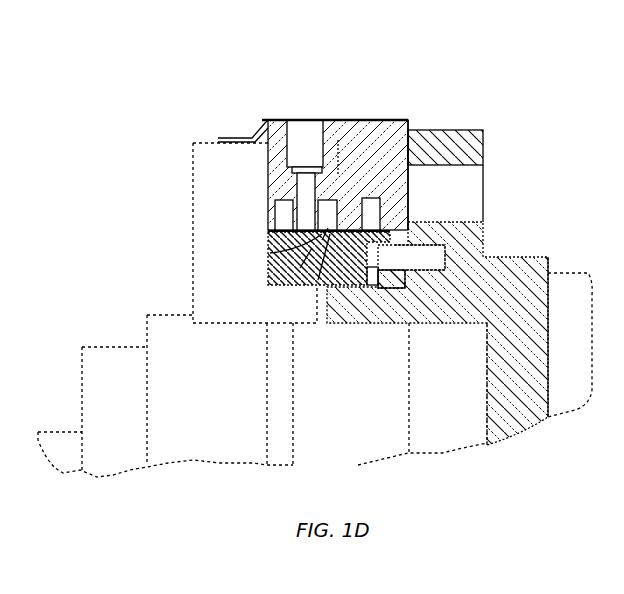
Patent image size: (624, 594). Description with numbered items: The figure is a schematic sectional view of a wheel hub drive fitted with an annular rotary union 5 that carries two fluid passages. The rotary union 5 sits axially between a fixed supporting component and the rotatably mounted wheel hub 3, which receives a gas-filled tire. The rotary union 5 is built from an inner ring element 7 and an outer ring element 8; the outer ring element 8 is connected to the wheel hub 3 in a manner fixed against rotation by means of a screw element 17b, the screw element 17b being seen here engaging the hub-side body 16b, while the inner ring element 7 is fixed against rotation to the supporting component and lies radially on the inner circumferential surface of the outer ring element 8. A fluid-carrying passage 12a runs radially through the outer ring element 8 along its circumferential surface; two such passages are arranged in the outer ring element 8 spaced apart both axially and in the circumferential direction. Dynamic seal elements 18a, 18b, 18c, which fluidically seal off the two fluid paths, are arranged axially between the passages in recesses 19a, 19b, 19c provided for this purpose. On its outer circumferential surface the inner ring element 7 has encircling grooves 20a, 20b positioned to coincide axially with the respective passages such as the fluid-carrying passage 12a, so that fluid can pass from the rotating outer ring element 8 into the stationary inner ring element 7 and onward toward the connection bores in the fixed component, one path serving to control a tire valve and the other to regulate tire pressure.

The wheel hub 3 is at (473, 150).
The rotary union 5 is at (362, 108).
The inner ring element 7 is at (268, 262).
The outer ring element 8 is at (380, 130).
The fluid-carrying passage 12a is at (300, 128).
The carrier body 16b is at (416, 287).
The screw element 17b is at (390, 262).
The dynamic seal element 18a is at (282, 215).
The dynamic seal element 18b is at (340, 170).
The dynamic seal element 18c is at (411, 135).
The recess 19a is at (268, 231).
The recess 19b is at (300, 268).
The recess 19c is at (318, 280).
The encircling groove 20a is at (270, 253).
The encircling groove 20b is at (328, 228).